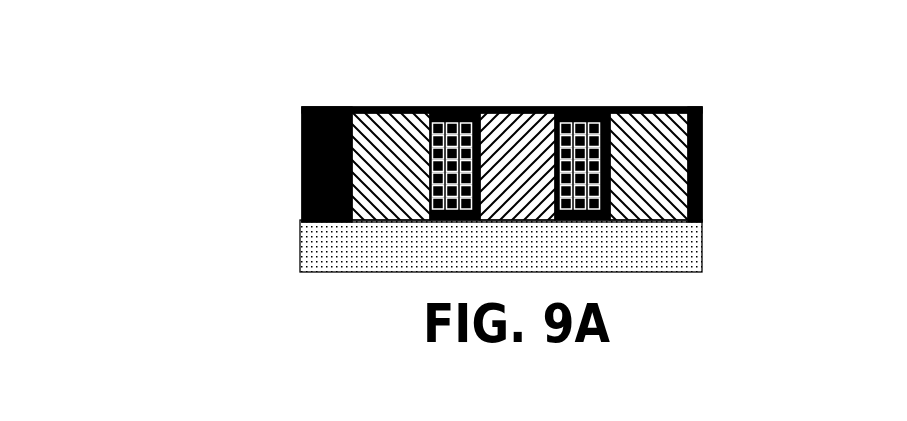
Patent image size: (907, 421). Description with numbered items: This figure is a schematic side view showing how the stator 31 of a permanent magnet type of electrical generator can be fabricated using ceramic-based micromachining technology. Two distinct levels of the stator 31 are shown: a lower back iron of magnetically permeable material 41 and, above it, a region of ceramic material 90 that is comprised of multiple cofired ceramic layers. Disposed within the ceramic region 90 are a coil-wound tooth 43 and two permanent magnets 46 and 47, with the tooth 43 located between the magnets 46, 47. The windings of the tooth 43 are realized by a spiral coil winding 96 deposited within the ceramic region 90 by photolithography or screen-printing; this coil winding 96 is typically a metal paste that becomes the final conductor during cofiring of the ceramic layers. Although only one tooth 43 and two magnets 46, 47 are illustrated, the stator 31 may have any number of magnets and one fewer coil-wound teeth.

The stator 31 is at (268, 172).
The back iron of magnetically permeable material 41 is at (712, 232).
The coil-wound tooth 43 is at (535, 96).
The permanent magnet 46 is at (397, 92).
The permanent magnet 47 is at (647, 92).
The region of ceramic material 90 is at (768, 127).
The spiral coil winding 96 is at (453, 108).